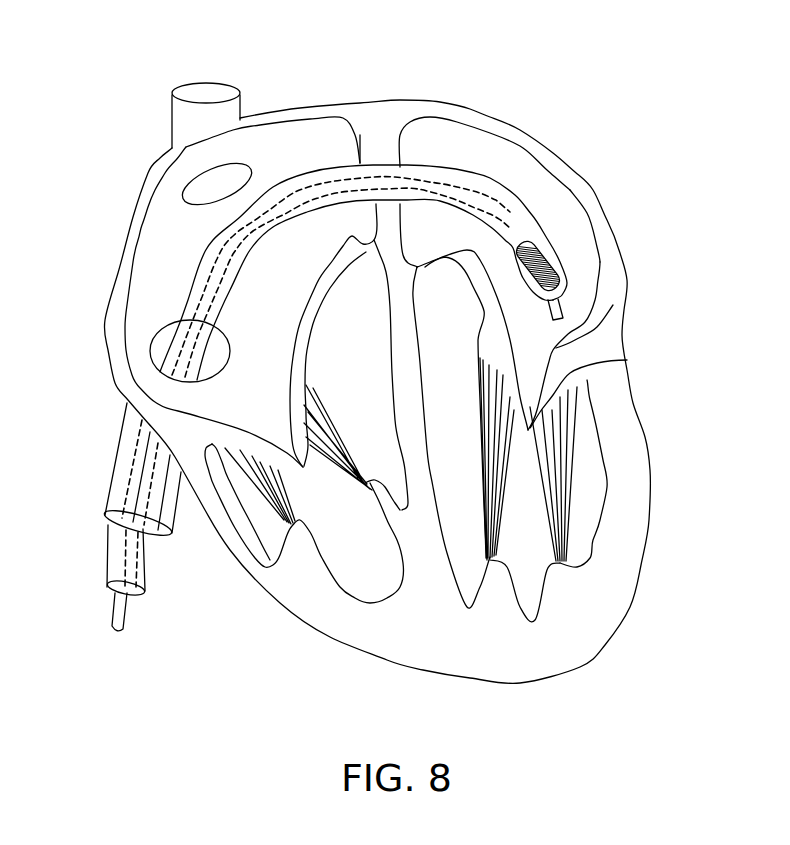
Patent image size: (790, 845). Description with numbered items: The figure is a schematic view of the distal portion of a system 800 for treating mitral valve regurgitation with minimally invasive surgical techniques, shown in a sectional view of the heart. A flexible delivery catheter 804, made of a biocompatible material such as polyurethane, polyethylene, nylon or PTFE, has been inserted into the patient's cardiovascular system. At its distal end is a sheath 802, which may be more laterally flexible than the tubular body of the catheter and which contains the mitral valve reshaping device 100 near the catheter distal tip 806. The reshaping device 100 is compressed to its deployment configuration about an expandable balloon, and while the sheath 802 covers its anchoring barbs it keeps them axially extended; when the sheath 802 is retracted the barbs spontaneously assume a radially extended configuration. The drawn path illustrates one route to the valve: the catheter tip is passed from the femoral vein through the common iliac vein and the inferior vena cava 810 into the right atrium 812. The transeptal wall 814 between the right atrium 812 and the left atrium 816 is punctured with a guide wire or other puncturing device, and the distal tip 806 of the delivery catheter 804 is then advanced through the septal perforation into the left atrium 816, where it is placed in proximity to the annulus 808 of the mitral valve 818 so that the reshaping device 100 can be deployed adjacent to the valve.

The system for treating mitral valve regurgitation 800 is at (538, 47).
The sheath 802 is at (543, 235).
The delivery catheter 804 is at (500, 200).
The mitral valve reshaping device 100 is at (563, 230).
The catheter distal tip 806 is at (620, 255).
The annulus of the mitral valve 808 is at (613, 305).
The inferior vena cava 810 is at (180, 513).
The right atrium 812 is at (166, 240).
The transeptal wall 814 is at (386, 143).
The left atrium 816 is at (585, 255).
The mitral valve 818 is at (627, 360).